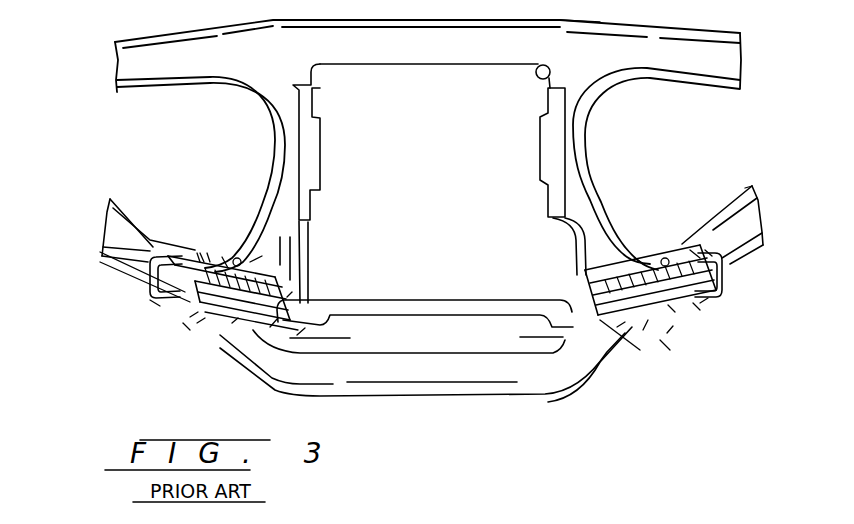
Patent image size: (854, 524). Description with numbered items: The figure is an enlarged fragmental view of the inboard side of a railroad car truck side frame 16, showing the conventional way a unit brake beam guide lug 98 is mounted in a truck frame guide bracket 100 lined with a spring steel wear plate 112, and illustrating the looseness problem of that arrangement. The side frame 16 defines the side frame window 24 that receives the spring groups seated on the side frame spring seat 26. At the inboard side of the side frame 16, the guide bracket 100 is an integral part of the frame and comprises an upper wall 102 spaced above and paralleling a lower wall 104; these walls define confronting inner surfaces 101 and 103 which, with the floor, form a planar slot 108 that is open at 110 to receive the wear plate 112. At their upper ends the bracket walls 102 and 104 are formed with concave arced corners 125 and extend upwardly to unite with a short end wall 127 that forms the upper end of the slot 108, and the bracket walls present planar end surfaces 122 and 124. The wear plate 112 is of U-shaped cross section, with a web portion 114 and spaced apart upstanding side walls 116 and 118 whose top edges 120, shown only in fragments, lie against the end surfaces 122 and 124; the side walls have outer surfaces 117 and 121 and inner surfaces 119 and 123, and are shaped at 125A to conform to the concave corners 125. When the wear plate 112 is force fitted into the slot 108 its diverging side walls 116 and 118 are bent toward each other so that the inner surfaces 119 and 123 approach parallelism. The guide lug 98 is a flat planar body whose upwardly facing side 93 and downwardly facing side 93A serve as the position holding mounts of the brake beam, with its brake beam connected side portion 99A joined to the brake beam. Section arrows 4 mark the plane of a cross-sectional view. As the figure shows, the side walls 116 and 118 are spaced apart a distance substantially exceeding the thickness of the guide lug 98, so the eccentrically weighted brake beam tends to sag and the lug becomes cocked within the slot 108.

The section line 4 is at (560, 333).
The side frame 16 is at (684, 44).
The side frame window 24 is at (548, 66).
The side frame spring seat 26 is at (448, 280).
The upwardly facing side 93 is at (213, 253).
The downwardly facing side 93A is at (240, 323).
The guide lug 98 is at (222, 257).
The brake beam connected side portion 99A is at (583, 11).
The guide bracket 100 is at (210, 350).
The inner surface 101 is at (745, 188).
The upper wall 102 is at (237, 257).
The inner surface 103 is at (665, 345).
The lower wall 104 is at (270, 327).
The slot 108 is at (287, 297).
The slot opening 110 is at (167, 307).
The wear plate 112 is at (190, 317).
The web portion 114 is at (200, 253).
The side wall 116 is at (705, 250).
The outer surface 117 is at (197, 253).
The side wall 118 is at (297, 335).
The inner surface 119 is at (207, 253).
The top edge 120 is at (617, 327).
The outer surface 121 is at (232, 323).
The planar end surface 122 is at (250, 262).
The inner surface 123 is at (183, 323).
The planar end surface 124 is at (197, 323).
The concave arced corner 125 is at (190, 253).
The conforming portion 125A is at (150, 300).
The end wall 127 is at (107, 253).